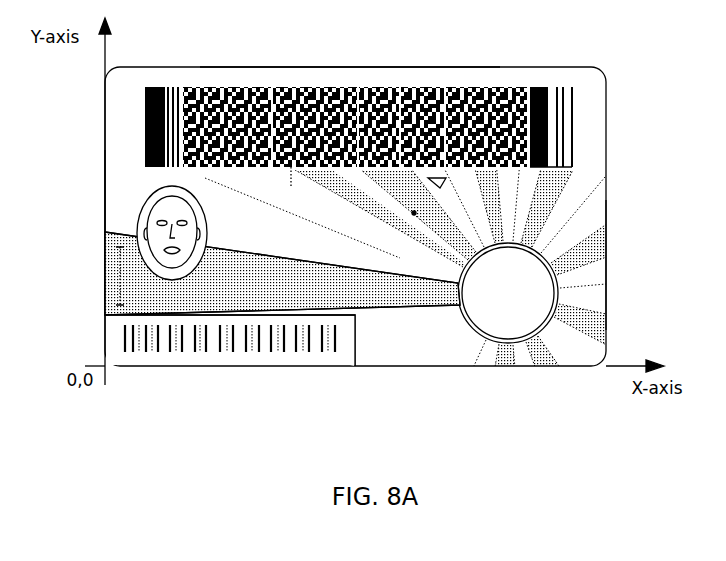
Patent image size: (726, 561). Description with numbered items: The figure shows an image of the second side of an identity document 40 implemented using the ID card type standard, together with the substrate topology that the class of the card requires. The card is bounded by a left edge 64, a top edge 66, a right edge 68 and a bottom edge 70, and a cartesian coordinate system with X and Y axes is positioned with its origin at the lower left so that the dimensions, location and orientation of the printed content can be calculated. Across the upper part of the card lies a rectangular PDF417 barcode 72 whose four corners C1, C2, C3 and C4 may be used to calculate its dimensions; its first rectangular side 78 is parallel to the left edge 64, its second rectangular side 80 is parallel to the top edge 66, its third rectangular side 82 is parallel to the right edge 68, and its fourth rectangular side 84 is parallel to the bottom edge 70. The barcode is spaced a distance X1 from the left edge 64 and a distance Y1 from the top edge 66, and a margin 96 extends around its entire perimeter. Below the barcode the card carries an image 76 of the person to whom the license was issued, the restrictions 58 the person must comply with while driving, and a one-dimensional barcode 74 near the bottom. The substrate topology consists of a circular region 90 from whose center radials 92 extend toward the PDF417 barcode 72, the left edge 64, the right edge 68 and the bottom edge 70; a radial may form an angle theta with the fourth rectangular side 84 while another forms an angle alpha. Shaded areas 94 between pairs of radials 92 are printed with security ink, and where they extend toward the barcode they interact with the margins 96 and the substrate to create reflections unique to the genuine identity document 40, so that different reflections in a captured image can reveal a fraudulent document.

The identity document 40 is at (105, 80).
The left edge 64 is at (105, 290).
The top edge 66 is at (385, 67).
The right edge 68 is at (608, 261).
The bottom edge 70 is at (516, 355).
The PDF417 barcode 72 is at (574, 132).
The one-dimensional barcode 74 is at (172, 352).
The image 76 is at (204, 214).
The first rectangular side 78 is at (145, 145).
The second rectangular side 80 is at (329, 88).
The third rectangular side 82 is at (575, 145).
The fourth rectangular side 84 is at (290, 186).
The region 90 is at (555, 293).
The radials 92 is at (263, 202).
The shaded areas 94 is at (414, 214).
The margins 96 is at (535, 172).
The restrictions 58 is at (355, 207).
The corner C1 is at (145, 167).
The corner C2 is at (146, 86).
The corner C3 is at (572, 86).
The corner C4 is at (573, 152).
The distance X1 is at (143, 127).
The distance Y1 is at (612, 83).